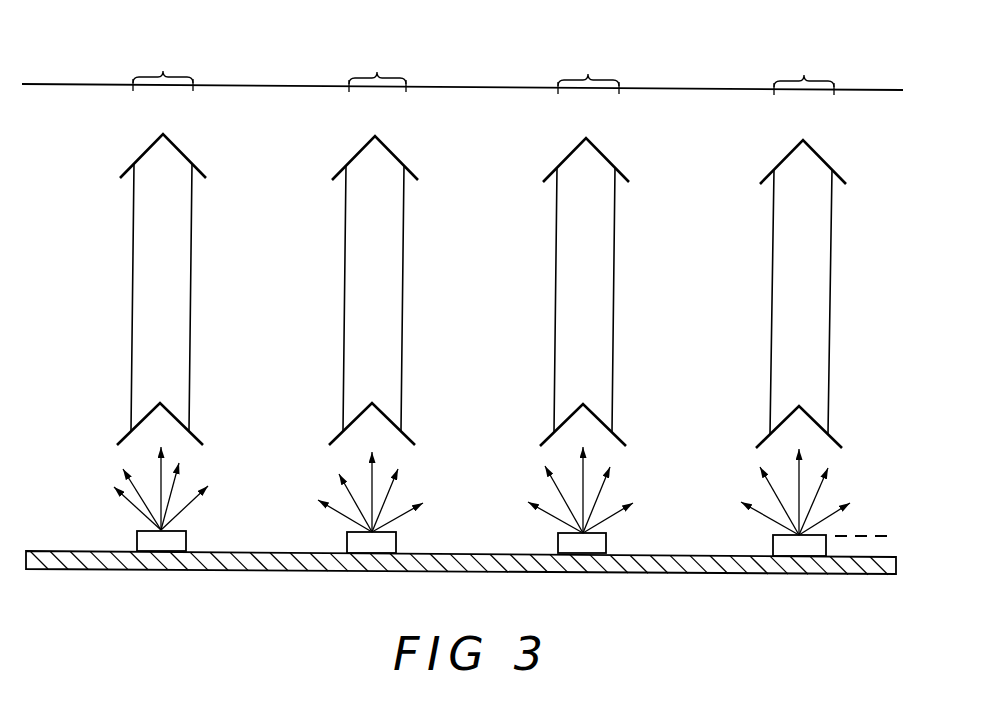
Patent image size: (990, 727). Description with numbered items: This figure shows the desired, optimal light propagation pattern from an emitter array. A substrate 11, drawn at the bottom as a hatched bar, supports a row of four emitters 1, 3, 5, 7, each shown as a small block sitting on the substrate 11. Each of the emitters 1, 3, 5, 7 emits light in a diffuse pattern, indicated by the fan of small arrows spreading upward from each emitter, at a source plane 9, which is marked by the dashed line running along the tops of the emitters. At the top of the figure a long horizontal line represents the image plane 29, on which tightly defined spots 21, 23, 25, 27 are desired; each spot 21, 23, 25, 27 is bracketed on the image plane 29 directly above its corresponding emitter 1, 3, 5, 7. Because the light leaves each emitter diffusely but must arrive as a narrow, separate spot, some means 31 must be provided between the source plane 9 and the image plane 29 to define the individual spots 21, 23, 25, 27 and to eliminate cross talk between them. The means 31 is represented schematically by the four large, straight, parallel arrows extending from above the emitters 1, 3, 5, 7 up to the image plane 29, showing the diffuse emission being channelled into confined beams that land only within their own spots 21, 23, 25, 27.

The emitter 1 is at (137, 541).
The emitter 3 is at (347, 545).
The emitter 5 is at (558, 546).
The emitter 7 is at (773, 548).
The source plane 9 is at (888, 536).
The substrate 11 is at (897, 563).
The spot 21 is at (163, 71).
The spot 23 is at (377, 72).
The spot 25 is at (588, 74).
The spot 27 is at (804, 75).
The image plane 29 is at (909, 91).
The means for defining spots 31 is at (856, 268).